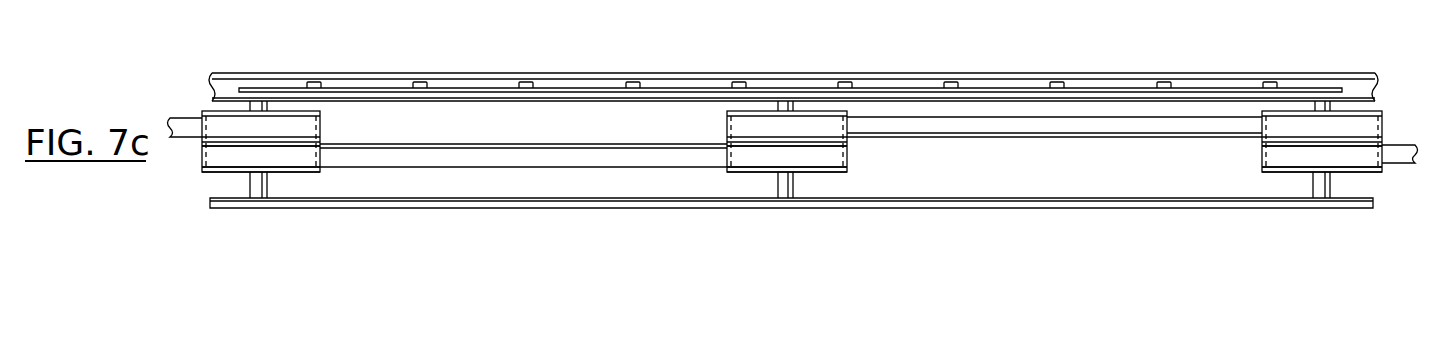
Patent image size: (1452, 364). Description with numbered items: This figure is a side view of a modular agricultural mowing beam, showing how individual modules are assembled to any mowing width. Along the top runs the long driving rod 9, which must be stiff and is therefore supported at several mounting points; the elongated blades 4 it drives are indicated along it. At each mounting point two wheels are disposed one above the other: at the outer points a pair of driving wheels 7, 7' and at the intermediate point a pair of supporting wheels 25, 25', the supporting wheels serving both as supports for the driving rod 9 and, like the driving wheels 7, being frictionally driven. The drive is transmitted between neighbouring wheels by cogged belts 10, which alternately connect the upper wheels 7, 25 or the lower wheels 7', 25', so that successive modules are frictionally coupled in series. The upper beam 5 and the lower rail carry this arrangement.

The blade 4 is at (632, 82).
The upper board 5 is at (226, 88).
The driving wheel 7 is at (793, 126).
The driving wheel 7' is at (781, 186).
The driving rod 9 is at (376, 90).
The cogged belt 10 is at (425, 157).
The supporting wheel 25 is at (758, 140).
The supporting wheel 25' is at (819, 158).